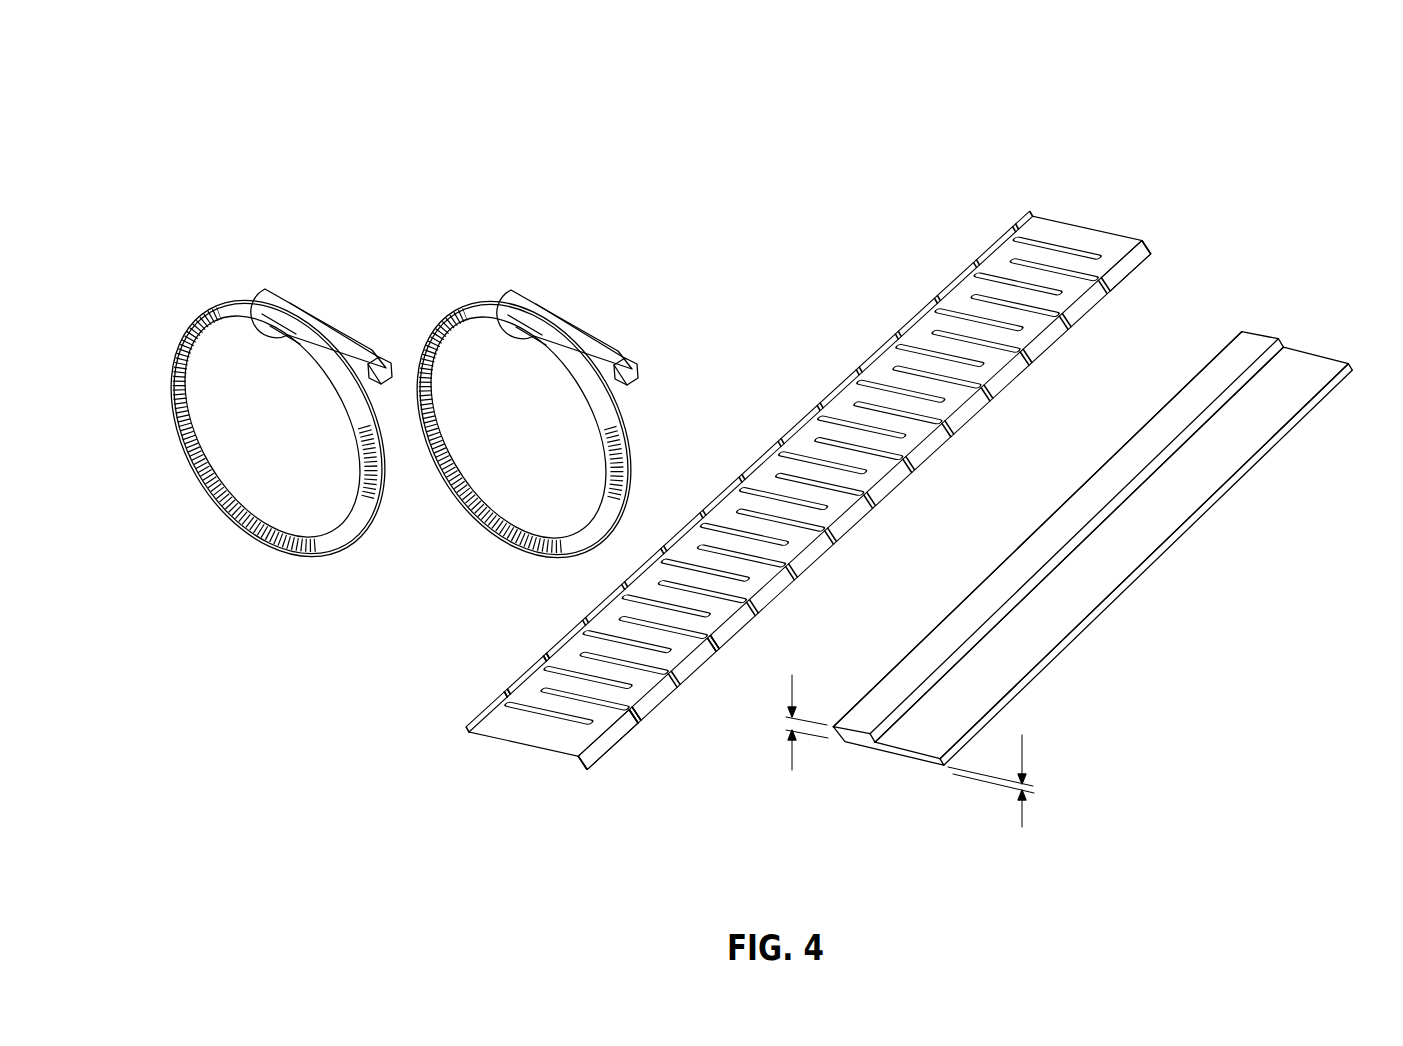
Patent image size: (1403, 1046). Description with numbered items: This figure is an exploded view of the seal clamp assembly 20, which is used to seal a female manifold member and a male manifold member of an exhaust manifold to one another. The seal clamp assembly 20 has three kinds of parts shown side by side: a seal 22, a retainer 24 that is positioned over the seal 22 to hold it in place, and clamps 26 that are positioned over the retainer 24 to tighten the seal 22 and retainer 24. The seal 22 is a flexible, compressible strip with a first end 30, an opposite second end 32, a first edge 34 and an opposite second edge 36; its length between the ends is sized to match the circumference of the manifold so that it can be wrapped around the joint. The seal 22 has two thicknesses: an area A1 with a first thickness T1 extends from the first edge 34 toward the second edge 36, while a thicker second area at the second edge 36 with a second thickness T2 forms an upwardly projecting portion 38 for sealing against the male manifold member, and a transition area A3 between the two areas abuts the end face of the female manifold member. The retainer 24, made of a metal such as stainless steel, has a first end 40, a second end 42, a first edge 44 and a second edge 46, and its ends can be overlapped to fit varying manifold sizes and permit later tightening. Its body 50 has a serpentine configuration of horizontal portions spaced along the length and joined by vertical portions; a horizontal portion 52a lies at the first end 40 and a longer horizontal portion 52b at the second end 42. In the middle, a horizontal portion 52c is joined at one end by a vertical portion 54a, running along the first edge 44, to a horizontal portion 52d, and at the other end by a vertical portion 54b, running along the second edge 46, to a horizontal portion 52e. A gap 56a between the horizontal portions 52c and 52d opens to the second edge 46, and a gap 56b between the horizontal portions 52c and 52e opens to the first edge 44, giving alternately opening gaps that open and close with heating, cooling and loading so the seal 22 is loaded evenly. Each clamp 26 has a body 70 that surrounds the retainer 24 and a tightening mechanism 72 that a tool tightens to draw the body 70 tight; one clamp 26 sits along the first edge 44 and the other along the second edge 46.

The seal clamp assembly 20 is at (1198, 160).
The seal 22 is at (1133, 636).
The retainer 24 is at (848, 242).
The clamps 26 is at (362, 272).
The first end 30 is at (1290, 345).
The second end 32 is at (903, 752).
The first edge 34 is at (1156, 552).
The second edge 36 is at (977, 586).
The upwardly projecting portion 38 is at (1070, 508).
The first end 40 is at (1058, 226).
The second end 42 is at (535, 748).
The first edge 44 is at (1010, 368).
The second edge 46 is at (832, 382).
The body 50 is at (818, 418).
The horizontal portion 52a is at (1095, 240).
The horizontal portion 52b is at (510, 723).
The horizontal portion 52c is at (580, 680).
The horizontal portion 52d is at (643, 654).
The horizontal portion 52e is at (492, 703).
The vertical portion 54a is at (642, 681).
The vertical portion 54b is at (540, 676).
The gap 56a is at (584, 686).
The gap 56b is at (615, 710).
The body 70 is at (232, 512).
The tightening mechanism 72 is at (625, 358).
The area A1 is at (917, 657).
The transition area A3 is at (1181, 436).
The first thickness T1 is at (993, 799).
The second thickness T2 is at (807, 742).